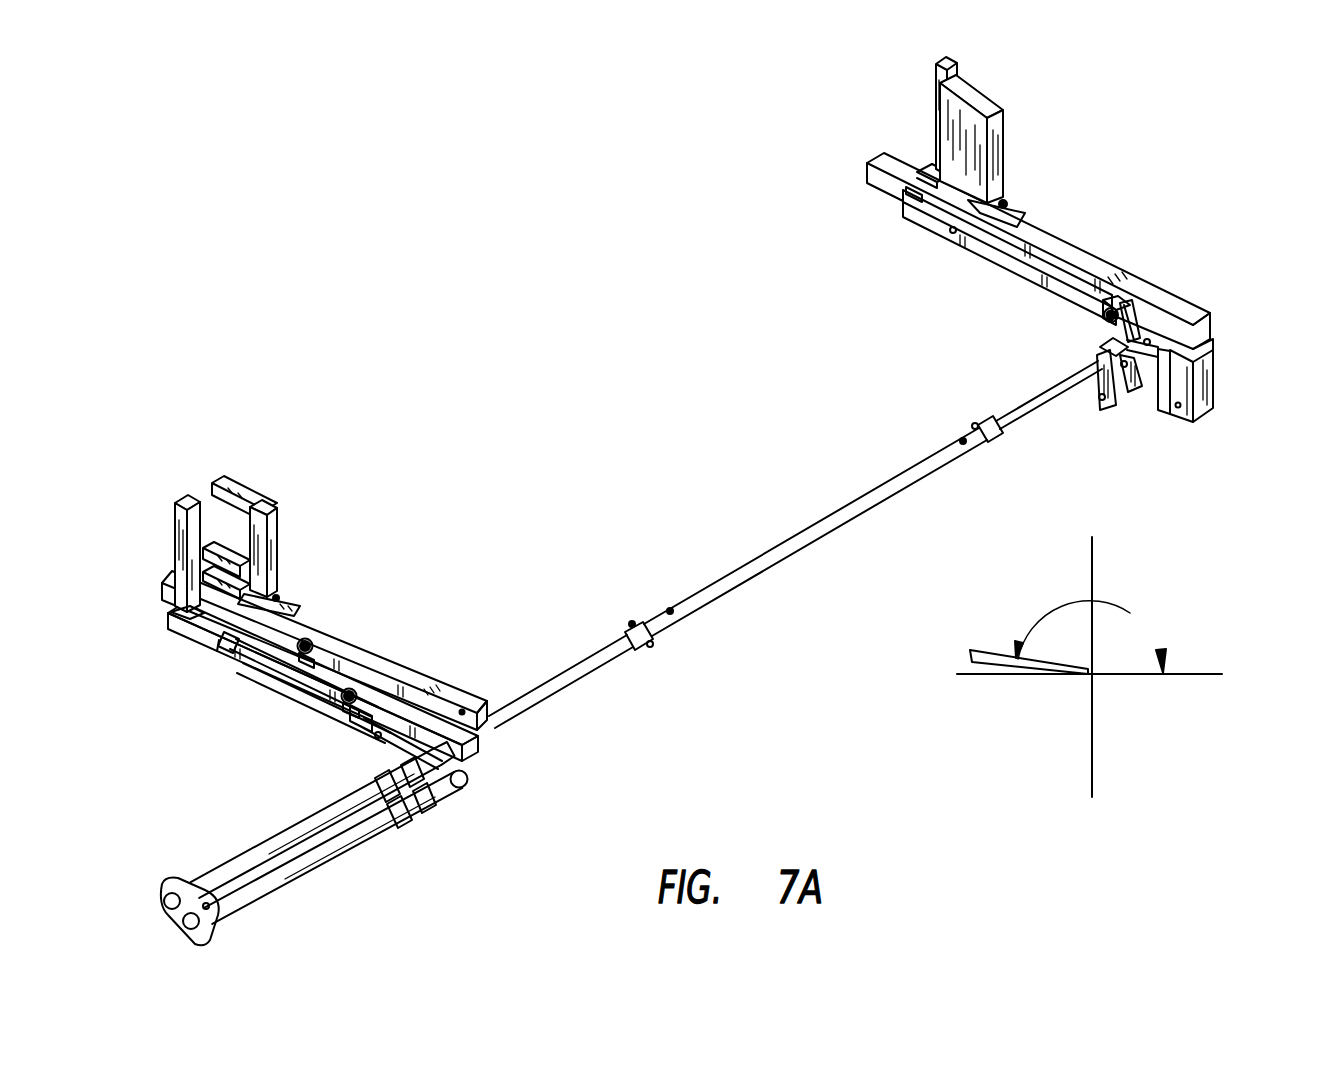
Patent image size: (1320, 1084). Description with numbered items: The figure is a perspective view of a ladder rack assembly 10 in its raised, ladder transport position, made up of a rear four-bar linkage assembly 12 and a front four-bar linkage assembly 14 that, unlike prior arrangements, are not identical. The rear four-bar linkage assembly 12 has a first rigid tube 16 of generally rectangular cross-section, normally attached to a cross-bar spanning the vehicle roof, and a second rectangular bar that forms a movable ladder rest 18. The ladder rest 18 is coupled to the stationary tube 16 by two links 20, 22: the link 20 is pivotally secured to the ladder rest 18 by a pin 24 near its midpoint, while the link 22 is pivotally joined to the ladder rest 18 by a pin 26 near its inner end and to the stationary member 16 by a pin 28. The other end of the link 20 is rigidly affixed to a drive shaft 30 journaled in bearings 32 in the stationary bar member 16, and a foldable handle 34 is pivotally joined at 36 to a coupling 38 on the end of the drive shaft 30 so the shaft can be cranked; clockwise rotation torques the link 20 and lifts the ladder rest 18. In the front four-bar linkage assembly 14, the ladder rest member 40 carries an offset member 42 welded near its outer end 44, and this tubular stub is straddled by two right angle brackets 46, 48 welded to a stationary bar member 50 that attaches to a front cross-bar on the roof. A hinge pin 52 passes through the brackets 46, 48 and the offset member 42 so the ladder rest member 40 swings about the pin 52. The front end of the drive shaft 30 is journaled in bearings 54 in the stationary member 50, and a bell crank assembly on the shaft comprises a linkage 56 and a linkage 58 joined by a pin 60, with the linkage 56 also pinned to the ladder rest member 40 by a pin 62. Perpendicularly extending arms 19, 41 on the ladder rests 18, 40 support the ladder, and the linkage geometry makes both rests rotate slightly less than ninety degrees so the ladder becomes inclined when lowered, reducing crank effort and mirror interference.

The ladder rack assembly 10 is at (696, 505).
The rear four-bar linkage assembly 12 is at (661, 685).
The front four-bar linkage assembly 14 is at (1076, 273).
The first rigid tube 16 is at (223, 627).
The movable ladder rest 18 is at (397, 668).
The perpendicularly extending arm 19 is at (270, 525).
The link 20 is at (330, 613).
The link 22 is at (218, 547).
The pin 24 is at (273, 683).
The pin 26 is at (224, 544).
The pin 28 is at (320, 730).
The drive shaft 30 is at (537, 697).
The bearings 32 is at (372, 762).
The foldable handle 34 is at (447, 790).
The pivot joint 36 is at (217, 907).
The coupling 38 is at (173, 883).
The ladder rest member 40 is at (1093, 267).
The perpendicularly extending arm 41 is at (997, 150).
The offset member 42 is at (1205, 405).
The outer end 44 is at (1205, 337).
The right angle bracket 46 is at (1170, 392).
The right angle bracket 48 is at (1217, 370).
The stationary bar member 50 is at (970, 243).
The hinge pin 52 is at (1178, 408).
The bearings 54 is at (1147, 337).
The linkage 56 is at (1100, 305).
The linkage 58 is at (1100, 353).
The pin 60 is at (1097, 403).
The pin 62 is at (1103, 327).